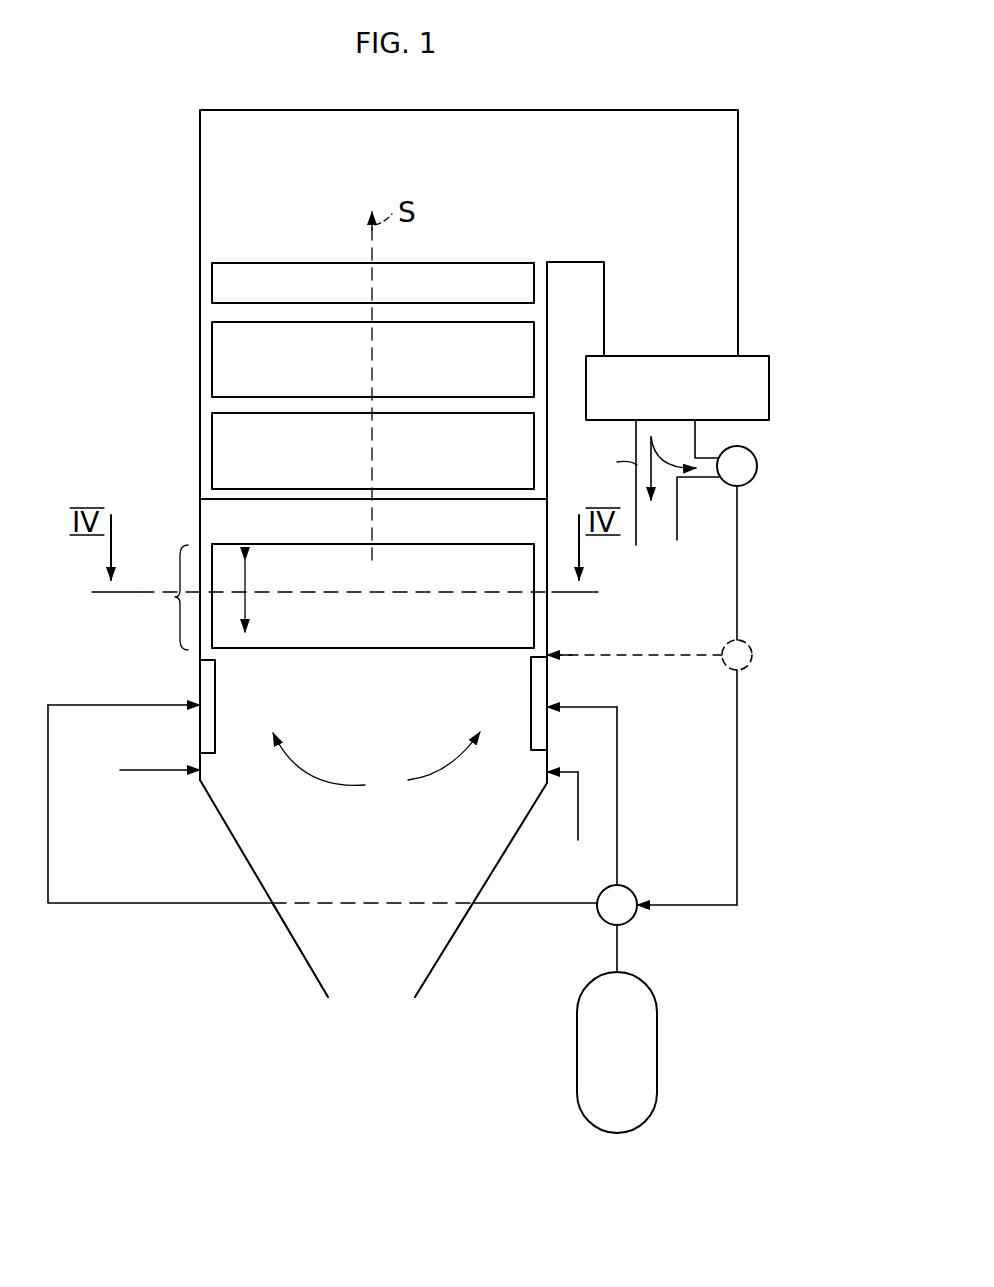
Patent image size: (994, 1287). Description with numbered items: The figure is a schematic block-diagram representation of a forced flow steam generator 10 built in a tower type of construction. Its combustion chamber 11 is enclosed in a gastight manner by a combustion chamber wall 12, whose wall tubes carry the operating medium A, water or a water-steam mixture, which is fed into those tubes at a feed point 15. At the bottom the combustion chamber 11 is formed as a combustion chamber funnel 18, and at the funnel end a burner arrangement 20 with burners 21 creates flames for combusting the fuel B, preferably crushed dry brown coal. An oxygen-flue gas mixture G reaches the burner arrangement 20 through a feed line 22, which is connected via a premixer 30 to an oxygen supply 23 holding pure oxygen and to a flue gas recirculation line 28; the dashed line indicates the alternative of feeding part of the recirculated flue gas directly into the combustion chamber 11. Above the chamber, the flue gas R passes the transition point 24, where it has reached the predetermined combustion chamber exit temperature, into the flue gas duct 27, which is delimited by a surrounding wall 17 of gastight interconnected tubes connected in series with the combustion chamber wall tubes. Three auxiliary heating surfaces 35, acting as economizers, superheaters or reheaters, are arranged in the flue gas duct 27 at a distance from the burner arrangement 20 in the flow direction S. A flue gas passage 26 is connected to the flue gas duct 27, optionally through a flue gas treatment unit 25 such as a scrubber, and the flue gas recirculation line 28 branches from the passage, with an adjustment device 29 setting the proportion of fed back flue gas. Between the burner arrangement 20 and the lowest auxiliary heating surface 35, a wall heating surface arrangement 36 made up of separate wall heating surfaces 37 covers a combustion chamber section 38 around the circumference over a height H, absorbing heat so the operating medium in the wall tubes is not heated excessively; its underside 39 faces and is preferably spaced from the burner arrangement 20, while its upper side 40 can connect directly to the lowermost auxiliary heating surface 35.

The forced flow steam generator 10 is at (765, 220).
The combustion chamber 11 is at (382, 735).
The combustion chamber wall 12 is at (337, 696).
The feed point 15 is at (197, 778).
The surrounding wall 17 is at (328, 376).
The combustion chamber funnel 18 is at (296, 950).
The burner arrangement 20 is at (376, 764).
The burner 21 is at (215, 700).
The feed line 22 is at (123, 905).
The oxygen supply 23 is at (645, 1040).
The transition point 24 is at (215, 508).
The flue gas treatment unit 25 is at (762, 378).
The flue gas passage 26 is at (688, 432).
The flue gas duct 27 is at (207, 312).
The flue gas recirculation line 28 is at (741, 612).
The adjustment device 29 is at (748, 478).
The premixer 30 is at (623, 912).
The auxiliary heating surface 35 is at (480, 298).
The wall heating surface arrangement 36 is at (362, 592).
The wall heating surface 37 is at (300, 555).
The combustion chamber section 38 is at (178, 605).
The underside 39 is at (325, 650).
The upper side 40 is at (425, 543).